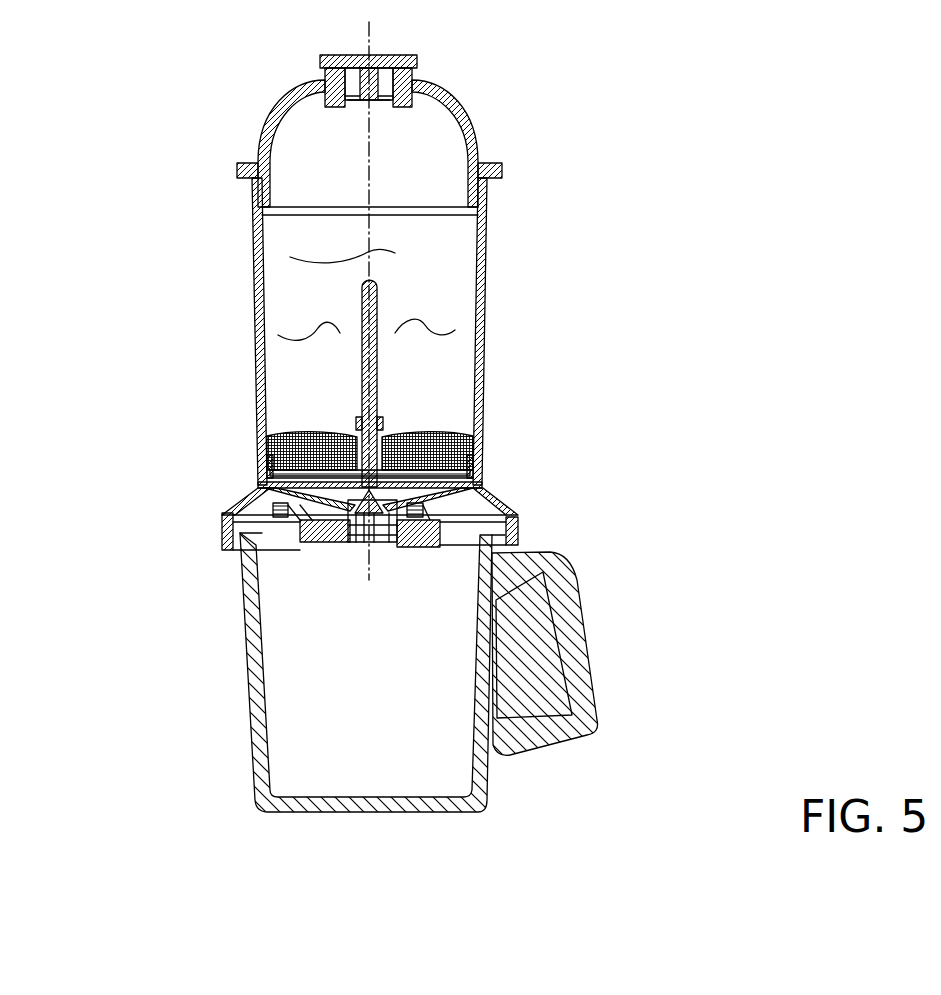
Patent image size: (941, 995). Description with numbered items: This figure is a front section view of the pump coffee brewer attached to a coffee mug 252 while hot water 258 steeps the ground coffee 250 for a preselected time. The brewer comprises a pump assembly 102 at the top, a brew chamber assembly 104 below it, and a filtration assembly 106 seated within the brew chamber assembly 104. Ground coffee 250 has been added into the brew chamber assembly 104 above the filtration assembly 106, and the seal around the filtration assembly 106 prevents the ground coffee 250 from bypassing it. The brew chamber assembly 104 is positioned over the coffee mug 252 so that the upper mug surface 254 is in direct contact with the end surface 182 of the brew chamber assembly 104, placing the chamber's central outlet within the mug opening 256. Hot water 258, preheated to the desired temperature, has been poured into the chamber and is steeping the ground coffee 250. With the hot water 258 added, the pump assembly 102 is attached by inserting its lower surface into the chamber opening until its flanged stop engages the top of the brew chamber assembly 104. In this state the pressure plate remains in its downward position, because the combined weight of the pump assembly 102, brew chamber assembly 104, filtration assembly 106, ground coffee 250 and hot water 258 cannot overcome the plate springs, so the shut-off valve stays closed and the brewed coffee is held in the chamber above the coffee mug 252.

The pump assembly 102 is at (470, 133).
The brew chamber assembly 104 is at (483, 327).
The filtration assembly 106 is at (377, 383).
The hot water 258 is at (285, 283).
The ground coffee 250 is at (277, 440).
The upper mug surface 254 is at (498, 527).
The end surface 182 is at (490, 522).
The mug opening 256 is at (332, 557).
The coffee mug 252 is at (590, 622).